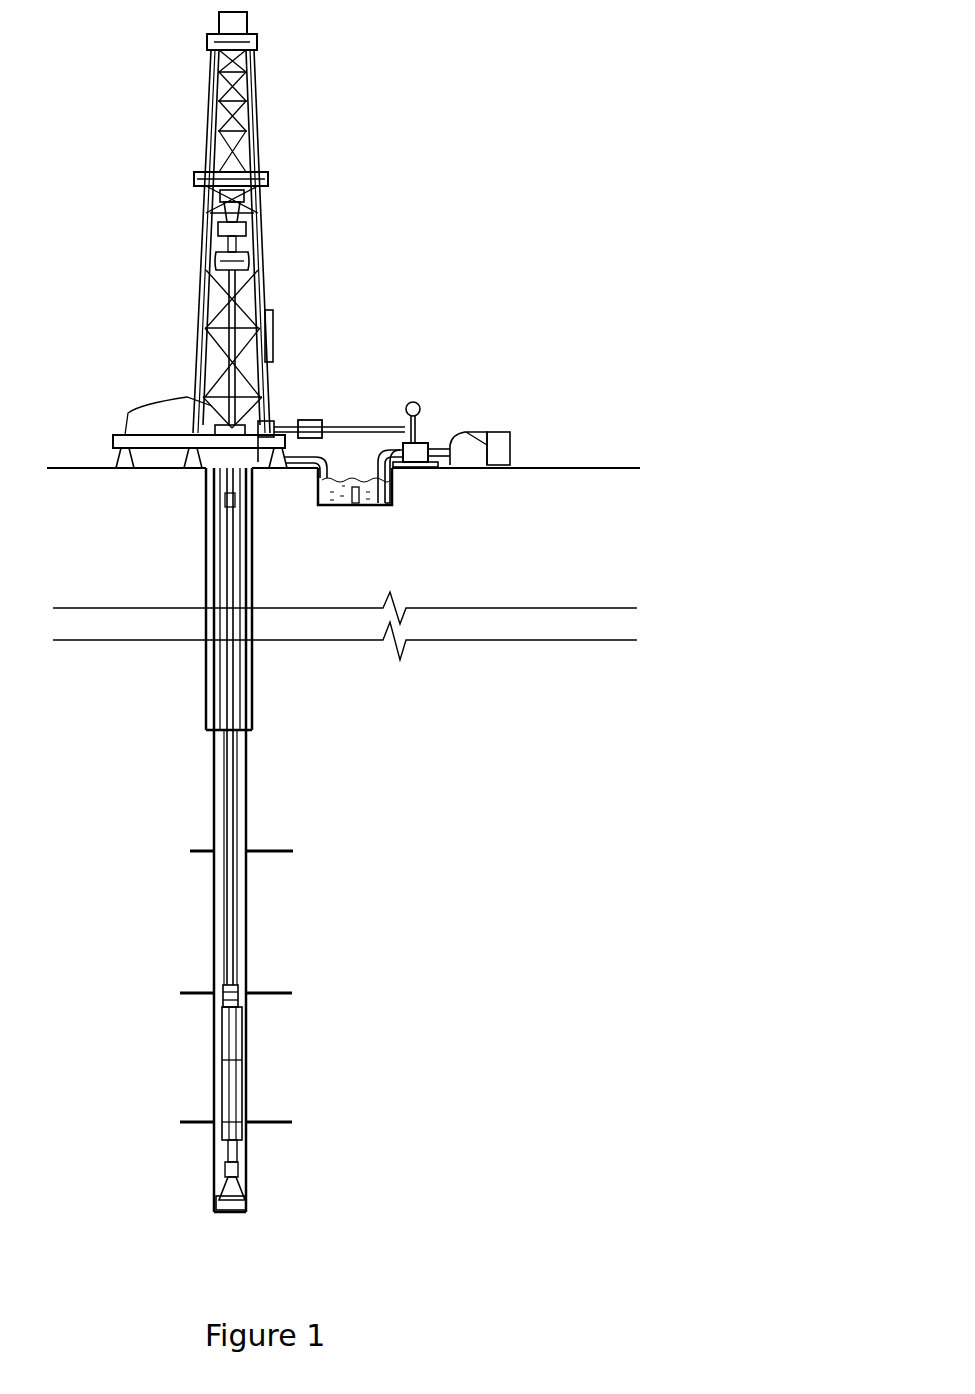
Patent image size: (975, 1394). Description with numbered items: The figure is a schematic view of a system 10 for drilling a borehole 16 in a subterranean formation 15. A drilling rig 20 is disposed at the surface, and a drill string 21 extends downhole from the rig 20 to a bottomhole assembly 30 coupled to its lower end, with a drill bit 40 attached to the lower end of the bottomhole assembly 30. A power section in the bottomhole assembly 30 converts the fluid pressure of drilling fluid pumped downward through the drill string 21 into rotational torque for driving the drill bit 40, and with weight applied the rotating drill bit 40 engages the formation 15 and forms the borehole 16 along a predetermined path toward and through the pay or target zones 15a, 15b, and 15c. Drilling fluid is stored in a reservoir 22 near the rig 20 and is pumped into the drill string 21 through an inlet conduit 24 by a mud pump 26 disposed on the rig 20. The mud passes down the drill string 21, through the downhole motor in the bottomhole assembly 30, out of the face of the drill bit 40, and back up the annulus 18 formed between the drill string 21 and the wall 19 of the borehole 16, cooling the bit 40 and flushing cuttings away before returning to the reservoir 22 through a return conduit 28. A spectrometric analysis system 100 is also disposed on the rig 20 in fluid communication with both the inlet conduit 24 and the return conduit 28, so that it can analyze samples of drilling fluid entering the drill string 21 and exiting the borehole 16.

The system 10 is at (432, 152).
The drilling rig 20 is at (270, 248).
The spectrometric analysis system 100 is at (270, 425).
The inlet conduit 24 is at (387, 452).
The mud pump 26 is at (417, 450).
The reservoir 22 is at (370, 497).
The return conduit 28 is at (285, 466).
The subterranean formation 15 is at (195, 555).
The drill string 21 is at (240, 778).
The annulus 18 is at (265, 851).
The target zone 15a is at (282, 918).
The wall of borehole 19 is at (224, 932).
The borehole 16 is at (248, 1023).
The target zone 15b is at (283, 1086).
The bottomhole assembly 30 is at (228, 1092).
The target zone 15c is at (280, 1193).
The drill bit 40 is at (216, 1202).